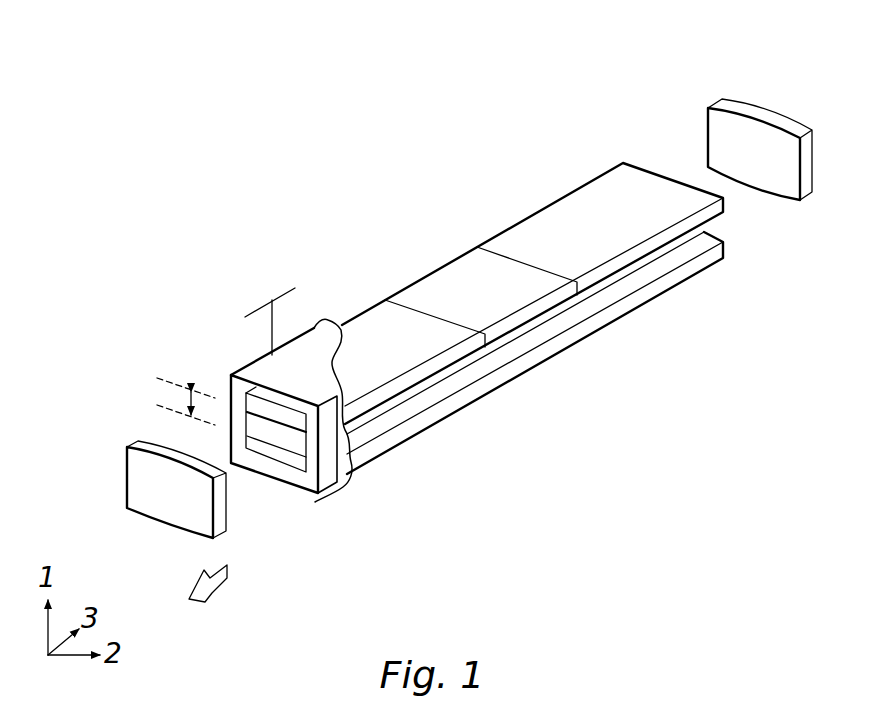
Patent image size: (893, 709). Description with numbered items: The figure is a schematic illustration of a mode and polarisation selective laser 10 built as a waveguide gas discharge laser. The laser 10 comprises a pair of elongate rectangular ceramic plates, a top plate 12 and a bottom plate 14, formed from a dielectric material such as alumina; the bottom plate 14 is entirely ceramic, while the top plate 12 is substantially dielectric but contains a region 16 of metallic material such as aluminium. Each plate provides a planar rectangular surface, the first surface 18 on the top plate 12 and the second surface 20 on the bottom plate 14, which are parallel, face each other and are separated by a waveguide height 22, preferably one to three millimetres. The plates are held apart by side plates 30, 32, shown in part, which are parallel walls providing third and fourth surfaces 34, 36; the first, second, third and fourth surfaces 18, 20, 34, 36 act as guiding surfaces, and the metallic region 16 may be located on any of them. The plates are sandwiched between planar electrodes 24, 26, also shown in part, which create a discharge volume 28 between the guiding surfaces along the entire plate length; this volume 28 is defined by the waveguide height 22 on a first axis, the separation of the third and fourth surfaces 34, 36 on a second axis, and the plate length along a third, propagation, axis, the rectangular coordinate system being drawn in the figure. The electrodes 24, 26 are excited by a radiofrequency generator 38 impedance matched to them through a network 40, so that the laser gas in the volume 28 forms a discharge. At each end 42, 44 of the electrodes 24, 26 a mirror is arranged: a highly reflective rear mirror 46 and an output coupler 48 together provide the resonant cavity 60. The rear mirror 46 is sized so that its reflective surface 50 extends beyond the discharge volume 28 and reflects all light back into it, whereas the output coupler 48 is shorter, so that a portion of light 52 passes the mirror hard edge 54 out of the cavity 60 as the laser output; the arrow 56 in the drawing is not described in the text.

The mode and polarisation selective laser 10 is at (653, 103).
The top plate 12 is at (590, 178).
The bottom plate 14 is at (663, 292).
The region of metallic material 16 is at (448, 266).
The first surface 18 is at (720, 220).
The second surface 20 is at (572, 314).
The waveguide height 22 is at (187, 405).
The planar electrode 24 is at (243, 372).
The planar electrode 26 is at (293, 486).
The discharge volume 28 is at (290, 424).
The side plate 30 is at (258, 422).
The side plate 32 is at (318, 495).
The third surface 34 is at (278, 434).
The fourth surface 36 is at (335, 445).
The radiofrequency generator 38 is at (281, 290).
The network 40 is at (273, 330).
The end of the electrodes 42 is at (808, 200).
The end of the electrodes 44 is at (177, 525).
The rear mirror 46 is at (802, 128).
The output coupler 48 is at (140, 497).
The reflective surface 50 is at (738, 161).
The portion of light 52 is at (213, 585).
The mirror hard edge 54 is at (215, 538).
The direction arrow 56 is at (530, 394).
The resonant cavity 60 is at (771, 104).